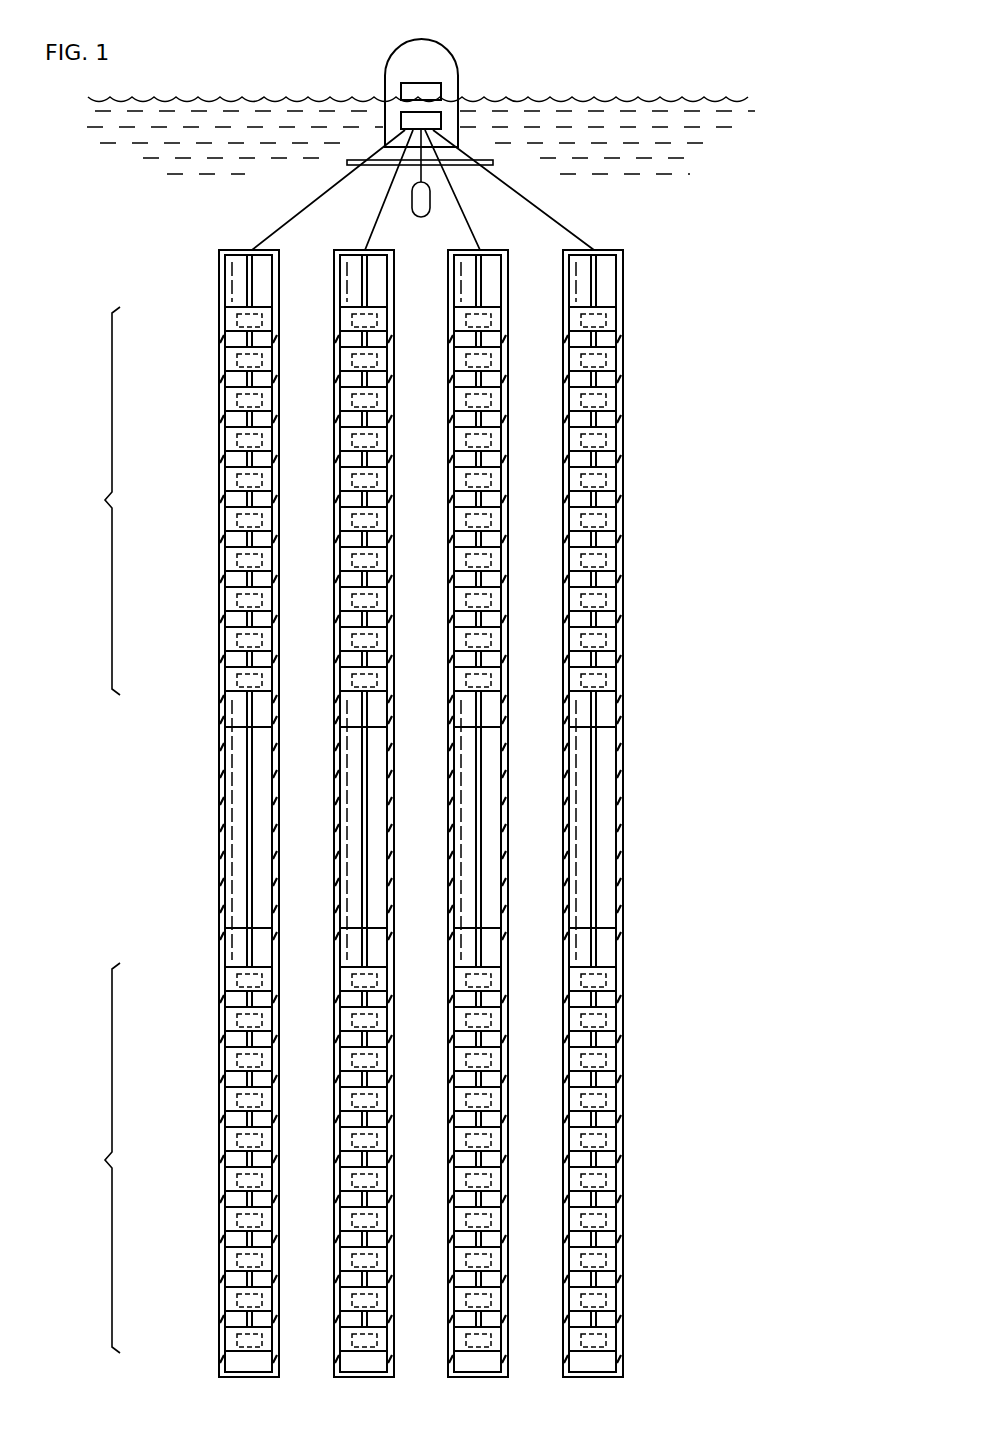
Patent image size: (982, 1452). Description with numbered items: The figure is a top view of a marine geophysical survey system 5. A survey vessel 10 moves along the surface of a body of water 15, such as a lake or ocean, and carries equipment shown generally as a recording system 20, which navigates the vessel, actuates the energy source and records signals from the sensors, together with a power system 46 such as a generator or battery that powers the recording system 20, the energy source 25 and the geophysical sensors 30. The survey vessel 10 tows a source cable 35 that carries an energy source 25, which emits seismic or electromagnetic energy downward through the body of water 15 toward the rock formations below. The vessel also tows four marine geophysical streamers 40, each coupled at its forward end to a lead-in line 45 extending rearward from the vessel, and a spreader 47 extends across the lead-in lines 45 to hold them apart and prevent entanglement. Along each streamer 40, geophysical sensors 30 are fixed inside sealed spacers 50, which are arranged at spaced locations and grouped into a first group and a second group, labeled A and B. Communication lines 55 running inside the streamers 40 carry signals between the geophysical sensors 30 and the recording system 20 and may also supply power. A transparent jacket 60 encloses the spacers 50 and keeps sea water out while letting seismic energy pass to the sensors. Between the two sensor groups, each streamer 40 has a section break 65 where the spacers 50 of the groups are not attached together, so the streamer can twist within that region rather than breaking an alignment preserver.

The marine geophysical survey system 5 is at (421, 691).
The survey vessel 10 is at (460, 84).
The body of water 15 is at (636, 120).
The recording system 20 is at (400, 122).
The energy source 25 is at (424, 217).
The geophysical sensor 30 is at (228, 525).
The source cable 35 is at (423, 153).
The marine geophysical streamer 40 is at (374, 813).
The lead-in line 45 is at (295, 216).
The power system 46 is at (432, 83).
The spreader 47 is at (352, 160).
The spacer 50 is at (227, 362).
The communication line 55 is at (245, 282).
The jacket 60 is at (224, 1318).
The section break 65 is at (222, 785).